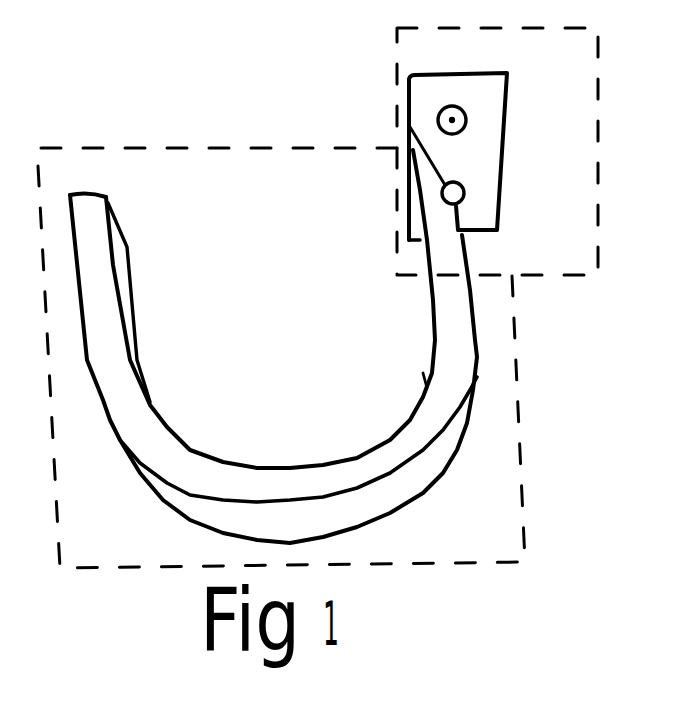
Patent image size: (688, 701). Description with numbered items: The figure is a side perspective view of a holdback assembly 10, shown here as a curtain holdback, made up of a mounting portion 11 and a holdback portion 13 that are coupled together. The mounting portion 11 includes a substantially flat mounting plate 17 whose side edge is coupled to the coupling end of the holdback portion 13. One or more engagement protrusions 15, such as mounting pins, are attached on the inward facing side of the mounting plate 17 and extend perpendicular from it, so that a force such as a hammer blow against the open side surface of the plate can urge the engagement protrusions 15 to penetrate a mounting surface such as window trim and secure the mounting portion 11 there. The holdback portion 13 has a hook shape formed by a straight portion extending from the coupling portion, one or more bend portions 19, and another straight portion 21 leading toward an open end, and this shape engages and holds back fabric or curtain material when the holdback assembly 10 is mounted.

The holdback assembly 10 is at (222, 116).
The mounting portion 11 is at (499, 156).
The holdback portion 13 is at (273, 346).
The engagement protrusions 15 is at (491, 123).
The mounting plate 17 is at (499, 156).
The bend portions 19 is at (184, 406).
The straight portion 21 is at (157, 246).